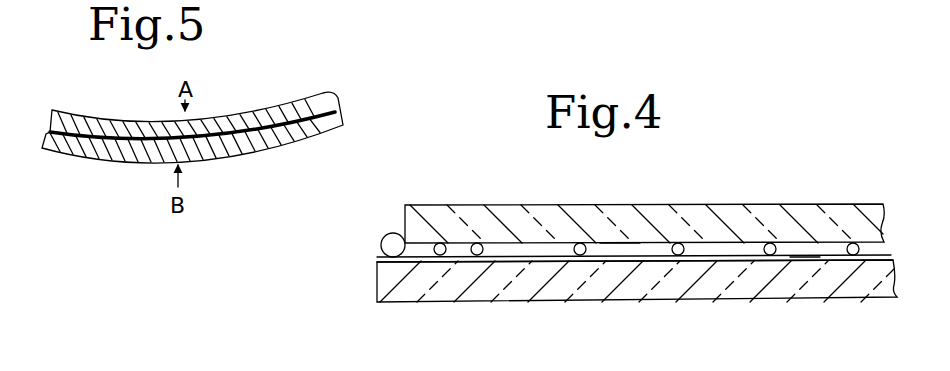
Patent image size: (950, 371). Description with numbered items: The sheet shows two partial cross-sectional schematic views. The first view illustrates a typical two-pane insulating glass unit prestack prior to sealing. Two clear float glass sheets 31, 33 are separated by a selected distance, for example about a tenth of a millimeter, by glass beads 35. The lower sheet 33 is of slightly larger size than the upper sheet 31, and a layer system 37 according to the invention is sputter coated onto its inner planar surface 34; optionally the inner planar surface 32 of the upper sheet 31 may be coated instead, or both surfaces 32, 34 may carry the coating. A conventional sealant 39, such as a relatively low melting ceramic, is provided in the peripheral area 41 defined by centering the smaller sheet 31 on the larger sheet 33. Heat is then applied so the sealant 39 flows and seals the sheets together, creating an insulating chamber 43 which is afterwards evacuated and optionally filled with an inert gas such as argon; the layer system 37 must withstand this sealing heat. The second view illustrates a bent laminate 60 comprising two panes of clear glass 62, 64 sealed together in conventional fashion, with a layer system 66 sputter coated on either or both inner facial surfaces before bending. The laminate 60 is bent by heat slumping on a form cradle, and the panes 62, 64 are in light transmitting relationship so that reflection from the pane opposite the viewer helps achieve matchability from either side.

In FIG. 4, the upper glass sheet 31 is at (640, 207).
In FIG. 4, the inner planar surface 32 is at (437, 243).
In FIG. 4, the lower glass sheet 33 is at (713, 293).
In FIG. 4, the inner planar surface 34 is at (793, 262).
In FIG. 4, the glass beads 35 is at (580, 245).
In FIG. 4, the layer system 37 is at (620, 262).
In FIG. 4, the sealant 39 is at (382, 238).
In FIG. 4, the peripheral area 41 is at (368, 254).
In FIG. 4, the insulating chamber 43 is at (615, 250).
In FIG. 5, the bent laminate 60 is at (73, 96).
In FIG. 5, the glass pane 62 is at (212, 120).
In FIG. 5, the glass pane 64 is at (142, 157).
In FIG. 5, the layer system 66 is at (298, 110).